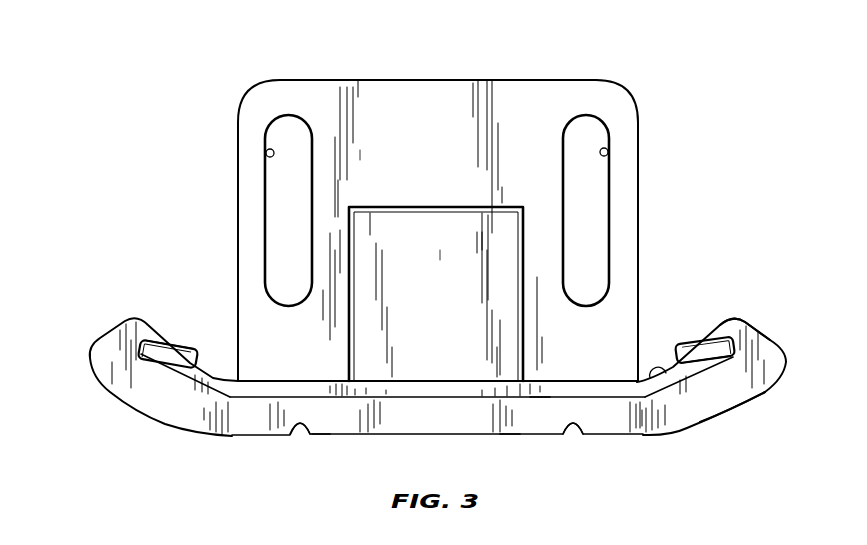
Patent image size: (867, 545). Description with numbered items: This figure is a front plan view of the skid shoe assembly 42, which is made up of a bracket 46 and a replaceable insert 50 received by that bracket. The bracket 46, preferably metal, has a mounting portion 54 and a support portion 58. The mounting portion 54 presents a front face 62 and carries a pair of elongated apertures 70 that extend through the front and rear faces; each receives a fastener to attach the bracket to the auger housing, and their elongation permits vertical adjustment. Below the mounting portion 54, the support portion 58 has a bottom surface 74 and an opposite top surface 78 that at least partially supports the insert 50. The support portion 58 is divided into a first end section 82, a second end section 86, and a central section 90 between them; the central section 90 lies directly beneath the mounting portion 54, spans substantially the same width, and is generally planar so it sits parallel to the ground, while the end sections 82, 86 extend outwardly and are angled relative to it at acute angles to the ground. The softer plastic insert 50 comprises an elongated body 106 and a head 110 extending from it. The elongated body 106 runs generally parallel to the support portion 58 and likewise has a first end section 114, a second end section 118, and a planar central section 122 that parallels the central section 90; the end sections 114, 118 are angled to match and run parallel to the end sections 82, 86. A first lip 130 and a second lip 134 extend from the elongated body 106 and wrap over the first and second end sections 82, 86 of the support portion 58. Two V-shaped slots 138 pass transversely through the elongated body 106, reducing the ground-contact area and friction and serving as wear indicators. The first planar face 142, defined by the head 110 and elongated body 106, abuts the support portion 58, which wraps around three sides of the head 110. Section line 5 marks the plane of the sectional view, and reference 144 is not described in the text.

The section line 5- 5 is at (437, 44).
The skid shoe assembly 42 is at (186, 92).
The bracket 46 is at (512, 80).
The replaceable insert 50 is at (795, 352).
The mounting portion 54 is at (323, 72).
The support portion 58 is at (243, 408).
The front face 62 is at (399, 115).
The elongated apertures 70 is at (268, 154).
The bottom surface 74 is at (538, 398).
The top surface 78 is at (662, 380).
The first end section 82 is at (708, 345).
The second end section 86 is at (160, 345).
The central section 90 is at (428, 383).
The elongated body 106 is at (322, 434).
The head 110 is at (418, 226).
The first end section 114 is at (780, 342).
The second end section 118 is at (95, 350).
The central section 122 is at (510, 412).
The first lip 130 is at (688, 352).
The second lip 134 is at (186, 340).
The V-shaped slots 138 is at (300, 422).
The first planar face 142 is at (464, 298).
The lower surface of right wing 144 is at (718, 405).